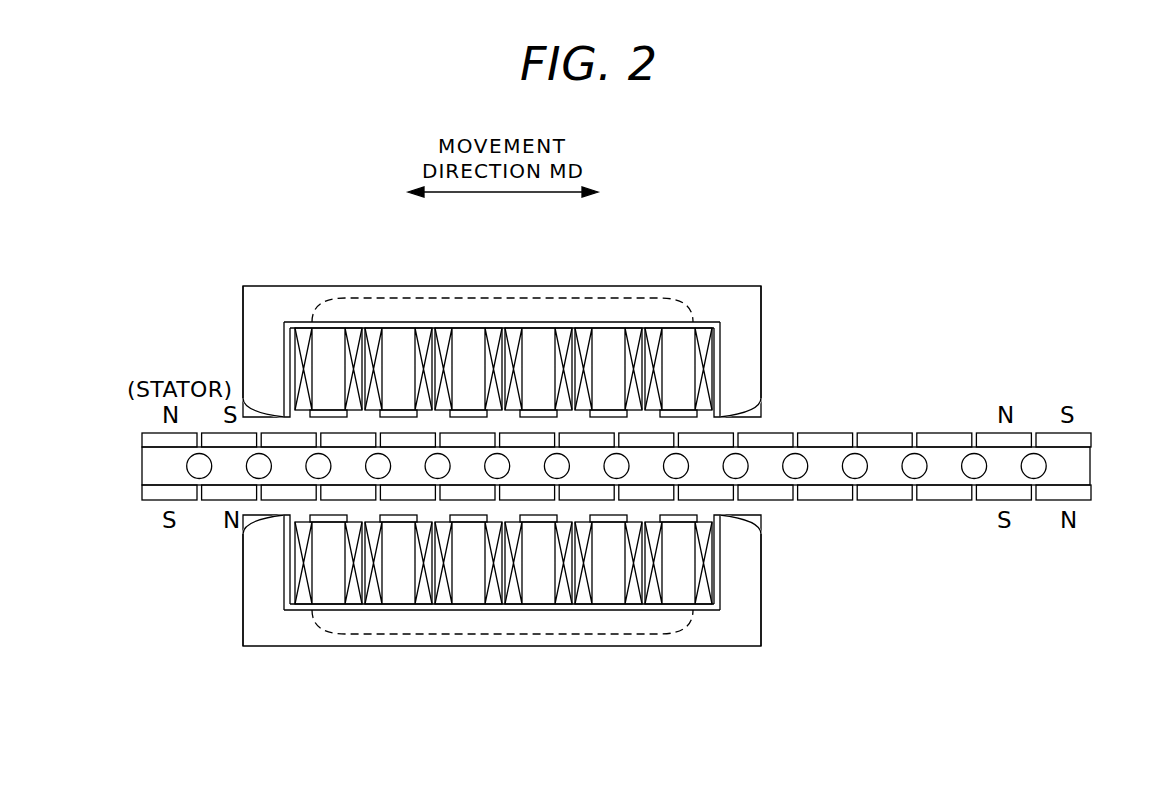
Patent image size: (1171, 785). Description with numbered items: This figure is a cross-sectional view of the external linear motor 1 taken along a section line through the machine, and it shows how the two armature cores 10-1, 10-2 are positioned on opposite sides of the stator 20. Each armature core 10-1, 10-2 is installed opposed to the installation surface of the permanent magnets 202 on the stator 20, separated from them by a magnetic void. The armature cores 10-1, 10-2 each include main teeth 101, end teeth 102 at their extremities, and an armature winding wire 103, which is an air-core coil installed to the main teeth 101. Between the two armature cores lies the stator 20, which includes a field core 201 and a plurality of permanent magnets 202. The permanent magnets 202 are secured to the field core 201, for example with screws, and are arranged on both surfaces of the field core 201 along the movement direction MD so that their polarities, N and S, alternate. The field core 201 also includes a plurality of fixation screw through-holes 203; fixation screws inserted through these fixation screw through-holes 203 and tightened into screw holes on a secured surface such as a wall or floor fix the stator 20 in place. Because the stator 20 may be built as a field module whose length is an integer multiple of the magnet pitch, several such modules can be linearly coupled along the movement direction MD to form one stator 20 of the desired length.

The linear motor 1 is at (945, 245).
The armature core 10-1 is at (760, 272).
The armature core 10-2 is at (762, 660).
The main teeth 101 is at (500, 298).
The end teeth 102 is at (265, 347).
The armature winding wire 103 is at (675, 357).
The stator 20 is at (1110, 435).
The field core 201 is at (942, 475).
The permanent magnets 202 is at (151, 442).
The fixation screw through-holes 203 is at (922, 466).